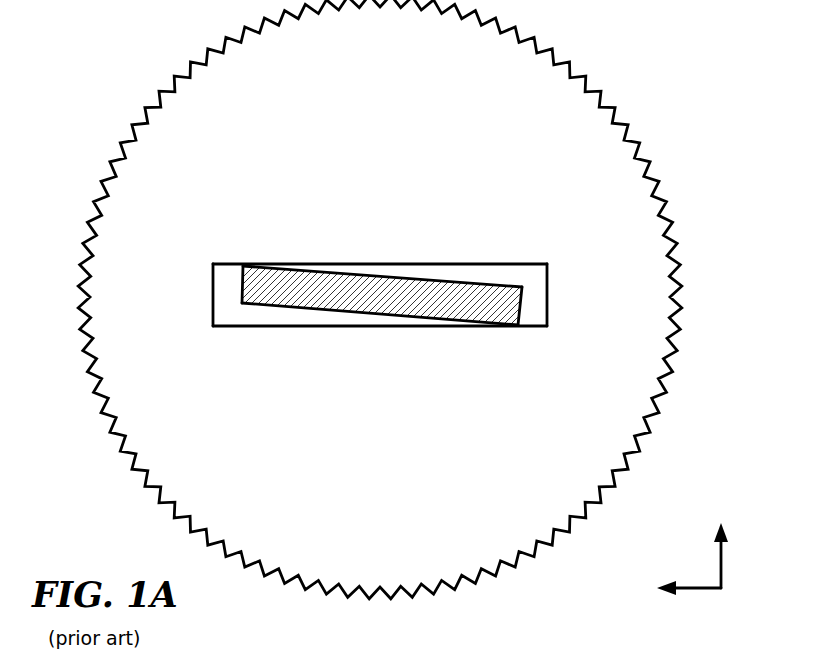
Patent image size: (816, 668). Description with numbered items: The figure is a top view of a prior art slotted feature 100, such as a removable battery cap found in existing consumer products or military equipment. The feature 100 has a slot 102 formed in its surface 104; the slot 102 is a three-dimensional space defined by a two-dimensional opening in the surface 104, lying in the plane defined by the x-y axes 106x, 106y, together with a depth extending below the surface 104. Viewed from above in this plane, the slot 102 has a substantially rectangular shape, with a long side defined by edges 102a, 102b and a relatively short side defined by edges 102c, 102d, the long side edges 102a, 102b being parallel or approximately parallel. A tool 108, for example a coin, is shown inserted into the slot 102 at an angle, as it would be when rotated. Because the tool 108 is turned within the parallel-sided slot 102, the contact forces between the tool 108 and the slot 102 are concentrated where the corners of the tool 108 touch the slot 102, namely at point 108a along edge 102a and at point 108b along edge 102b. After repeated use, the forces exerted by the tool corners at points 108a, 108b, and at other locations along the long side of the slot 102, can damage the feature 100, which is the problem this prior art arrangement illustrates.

The slotted feature 100 is at (389, 301).
The slot 102 is at (380, 290).
The long side edge 102a is at (392, 264).
The long side edge 102b is at (393, 328).
The short side edge 102c is at (213, 297).
The short side edge 102d is at (547, 292).
The surface 104 is at (399, 114).
The x-axis 106x is at (722, 540).
The y-axis 106y is at (658, 590).
The tool 108 is at (408, 288).
The contact point 108a is at (247, 245).
The contact point 108b is at (521, 346).